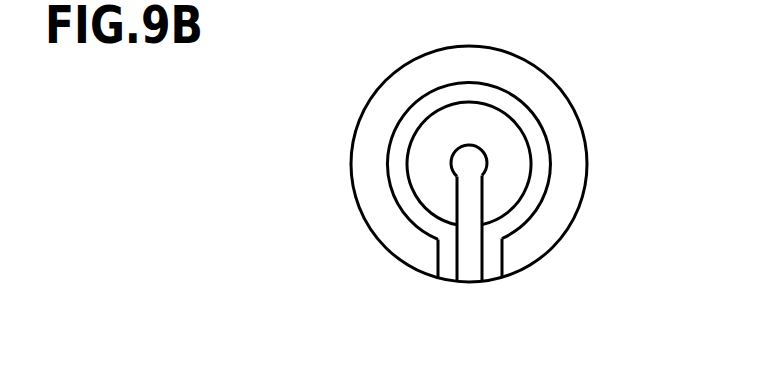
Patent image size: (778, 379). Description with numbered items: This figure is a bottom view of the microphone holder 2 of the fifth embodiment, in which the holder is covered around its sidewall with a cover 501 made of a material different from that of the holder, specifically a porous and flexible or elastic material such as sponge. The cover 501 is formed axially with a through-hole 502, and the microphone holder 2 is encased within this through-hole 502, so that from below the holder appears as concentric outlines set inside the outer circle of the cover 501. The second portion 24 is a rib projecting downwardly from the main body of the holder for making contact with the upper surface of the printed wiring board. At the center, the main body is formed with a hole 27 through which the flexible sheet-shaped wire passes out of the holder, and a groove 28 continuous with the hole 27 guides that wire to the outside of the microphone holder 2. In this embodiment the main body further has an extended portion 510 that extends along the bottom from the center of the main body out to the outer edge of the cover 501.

The microphone holder 2 is at (508, 82).
The second portion 24 is at (522, 218).
The hole 27 is at (478, 148).
The groove 28 is at (481, 260).
The cover 501 is at (589, 162).
The through-hole 502 is at (538, 204).
The extended portion 510 is at (502, 263).